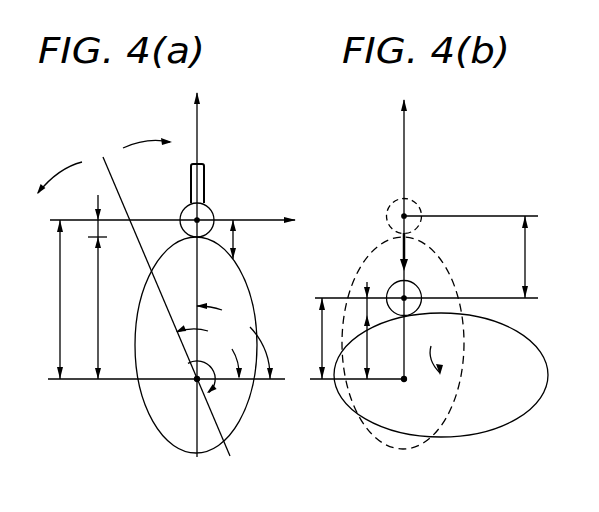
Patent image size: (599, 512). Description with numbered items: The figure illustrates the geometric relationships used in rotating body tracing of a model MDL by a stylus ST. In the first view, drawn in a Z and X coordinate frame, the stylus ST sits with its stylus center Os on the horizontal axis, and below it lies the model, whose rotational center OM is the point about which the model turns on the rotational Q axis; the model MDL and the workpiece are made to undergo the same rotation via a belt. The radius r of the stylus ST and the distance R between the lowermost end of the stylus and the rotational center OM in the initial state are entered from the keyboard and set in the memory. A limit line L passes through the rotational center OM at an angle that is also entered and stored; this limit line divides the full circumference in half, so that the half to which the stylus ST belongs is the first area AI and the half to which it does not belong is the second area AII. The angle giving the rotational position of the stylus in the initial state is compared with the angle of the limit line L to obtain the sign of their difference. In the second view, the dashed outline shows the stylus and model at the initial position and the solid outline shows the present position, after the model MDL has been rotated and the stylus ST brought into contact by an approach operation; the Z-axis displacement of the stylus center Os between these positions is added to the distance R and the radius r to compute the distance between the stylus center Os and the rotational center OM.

In FIG. 4A, the stylus ST is at (209, 212).
In FIG. 4B, the stylus ST is at (418, 287).
In FIG. 4A, the stylus center Os is at (192, 215).
In FIG. 4B, the stylus center Os is at (396, 287).
In FIG. 4A, the rotational center of the model OM is at (166, 392).
In FIG. 4B, the rotational center of the model OM is at (371, 381).
In FIG. 4A, the Q axis Q is at (196, 345).
In FIG. 4B, the Q axis Q is at (403, 343).
In FIG. 4A, the limit line L is at (169, 293).
In FIG. 4B, the model MDL is at (496, 415).
In FIG. 4A, the first area AI is at (147, 132).
In FIG. 4A, the second area AII is at (57, 173).
In FIG. 4A, the radius of the stylus r is at (157, 227).
In FIG. 4B, the radius of the stylus r is at (371, 304).
In FIG. 4A, the distance R0 R is at (101, 318).
In FIG. 4B, the distance R0 R is at (364, 347).
In FIG. 4A, the Z axis Z is at (216, 274).
In FIG. 4B, the Z axis Z is at (422, 234).
In FIG. 4A, the X axis X is at (194, 221).